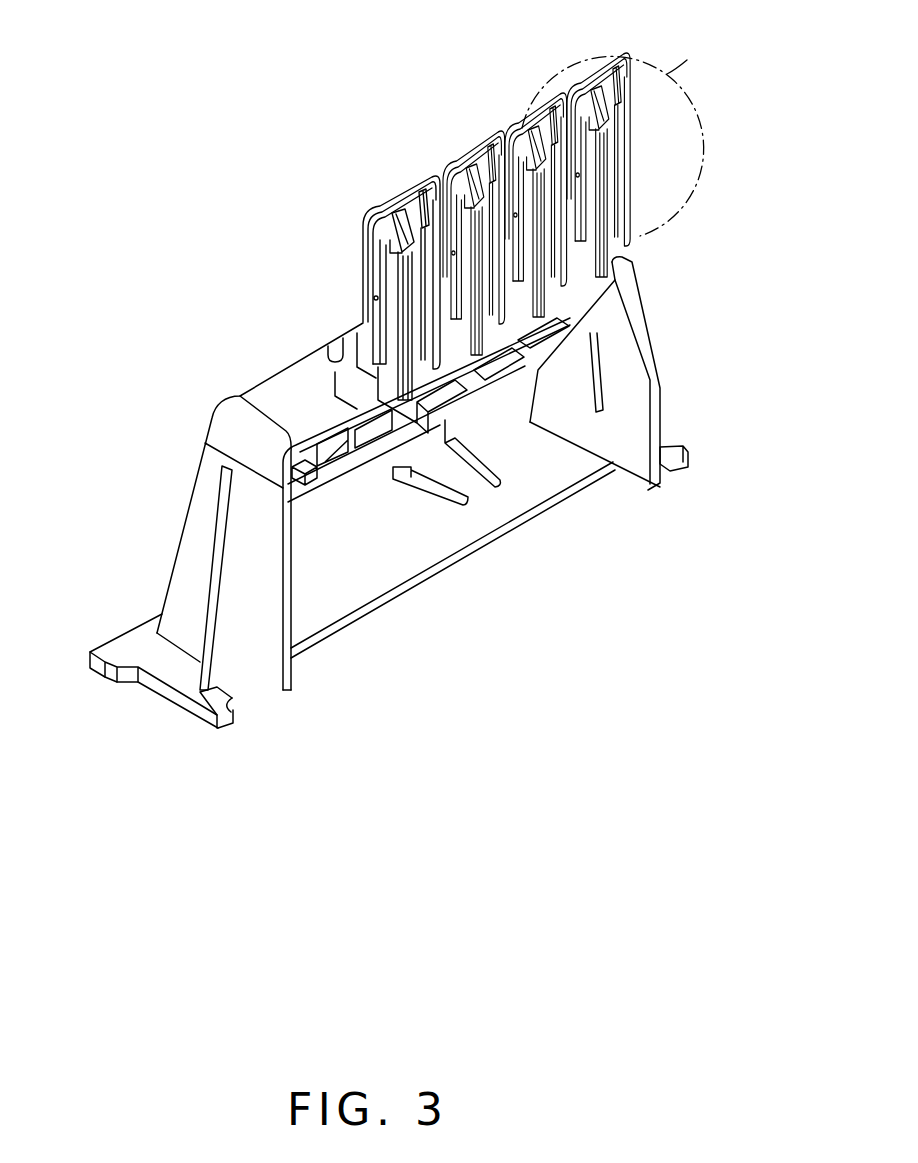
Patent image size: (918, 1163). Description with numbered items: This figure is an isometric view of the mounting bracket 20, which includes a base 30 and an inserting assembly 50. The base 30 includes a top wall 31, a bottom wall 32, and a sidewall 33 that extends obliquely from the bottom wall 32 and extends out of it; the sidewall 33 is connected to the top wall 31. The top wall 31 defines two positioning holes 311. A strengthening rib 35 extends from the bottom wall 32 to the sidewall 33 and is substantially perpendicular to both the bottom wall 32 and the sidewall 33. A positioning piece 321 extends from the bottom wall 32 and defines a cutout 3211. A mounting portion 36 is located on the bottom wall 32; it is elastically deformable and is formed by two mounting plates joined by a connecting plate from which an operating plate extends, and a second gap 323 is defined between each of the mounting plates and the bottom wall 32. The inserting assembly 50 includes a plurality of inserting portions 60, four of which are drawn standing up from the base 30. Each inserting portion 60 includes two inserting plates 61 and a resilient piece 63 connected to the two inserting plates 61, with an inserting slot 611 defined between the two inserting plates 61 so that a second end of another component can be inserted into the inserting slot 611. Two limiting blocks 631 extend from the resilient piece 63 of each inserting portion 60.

The mounting bracket 20 is at (340, 136).
The base 30 is at (389, 523).
The top wall 31 is at (300, 413).
The positioning holes 311 is at (301, 322).
The bottom wall 32 is at (400, 535).
The positioning piece 321 is at (233, 738).
The cutout 3211 is at (233, 705).
The second gap 323 is at (527, 460).
The sidewall 33 is at (268, 607).
The strengthening rib 35 is at (225, 602).
The mounting portion 36 is at (477, 463).
The inserting assembly 50 is at (299, 345).
The inserting portions 60 is at (577, 204).
The inserting plates 61 is at (603, 204).
The inserting slot 611 is at (602, 225).
The resilient piece 63 is at (600, 101).
The limiting blocks 631 is at (592, 100).